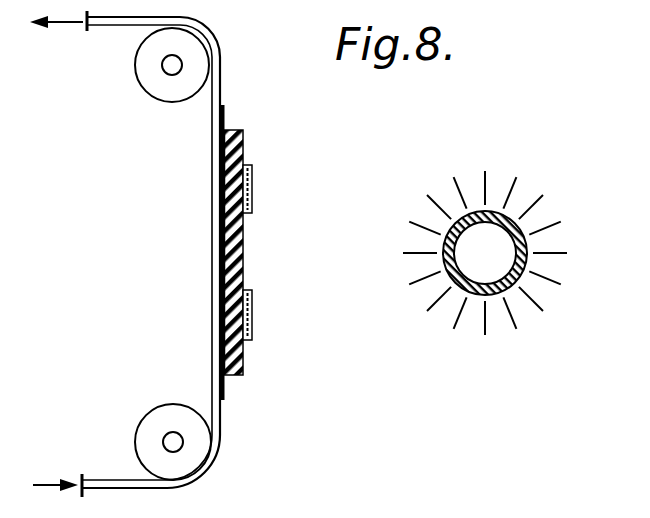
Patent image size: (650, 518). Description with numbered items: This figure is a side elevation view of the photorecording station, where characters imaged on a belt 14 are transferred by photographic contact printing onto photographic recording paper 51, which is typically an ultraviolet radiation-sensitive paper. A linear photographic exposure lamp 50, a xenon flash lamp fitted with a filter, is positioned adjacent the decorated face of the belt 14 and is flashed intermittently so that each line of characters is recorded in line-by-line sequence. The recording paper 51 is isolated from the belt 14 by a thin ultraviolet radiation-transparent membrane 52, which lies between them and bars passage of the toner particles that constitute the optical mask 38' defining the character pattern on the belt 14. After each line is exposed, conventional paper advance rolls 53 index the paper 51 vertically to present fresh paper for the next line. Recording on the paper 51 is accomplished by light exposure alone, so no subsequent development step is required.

The photographic recording paper 51 is at (212, 239).
The paper advance rolls 53 is at (155, 82).
The ultraviolet radiation-transparent membrane 52 is at (222, 107).
The belt 14 is at (243, 148).
The optical mask 38' is at (281, 252).
The linear photographic exposure lamp 50 is at (517, 222).